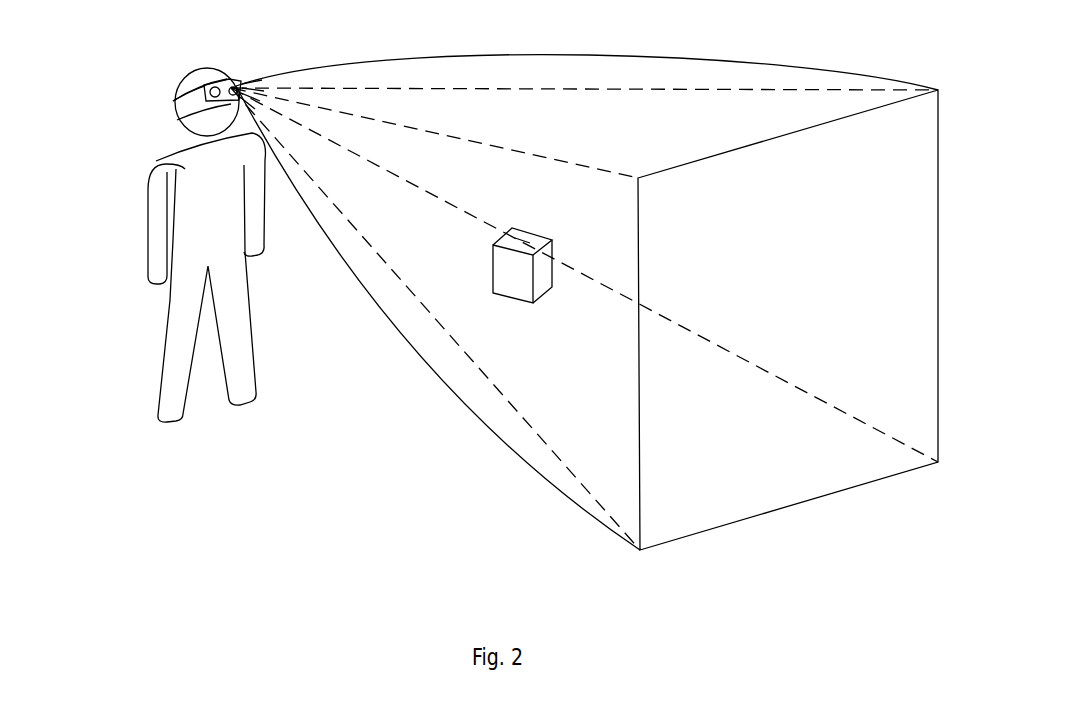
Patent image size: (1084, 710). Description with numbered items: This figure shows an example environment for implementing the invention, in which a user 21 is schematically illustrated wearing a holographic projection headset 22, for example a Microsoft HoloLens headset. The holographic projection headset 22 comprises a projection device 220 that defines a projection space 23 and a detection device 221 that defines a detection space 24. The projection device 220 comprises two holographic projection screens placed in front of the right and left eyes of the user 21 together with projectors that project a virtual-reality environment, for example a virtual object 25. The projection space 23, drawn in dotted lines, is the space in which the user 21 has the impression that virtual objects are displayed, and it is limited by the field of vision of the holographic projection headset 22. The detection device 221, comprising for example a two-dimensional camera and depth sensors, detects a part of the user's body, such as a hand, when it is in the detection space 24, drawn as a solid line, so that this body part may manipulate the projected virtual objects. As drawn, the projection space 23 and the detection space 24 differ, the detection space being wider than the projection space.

The user 21 is at (156, 161).
The holographic projection headset 22 is at (200, 82).
The projection device 220 is at (177, 120).
The detection device 221 is at (227, 79).
The projection space 23 is at (574, 131).
The detection space 24 is at (427, 330).
The virtual object 25 is at (517, 283).